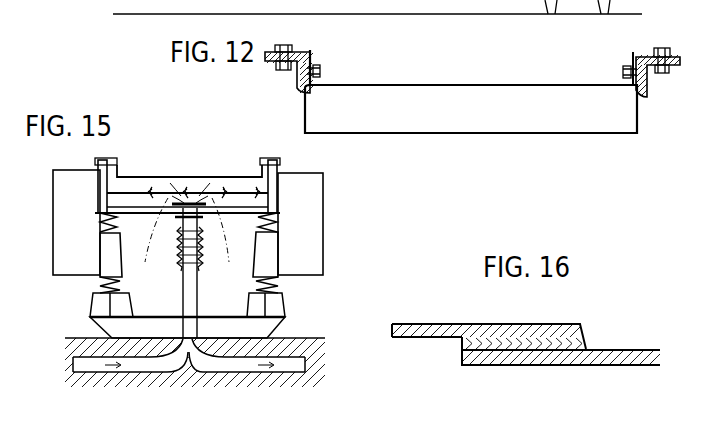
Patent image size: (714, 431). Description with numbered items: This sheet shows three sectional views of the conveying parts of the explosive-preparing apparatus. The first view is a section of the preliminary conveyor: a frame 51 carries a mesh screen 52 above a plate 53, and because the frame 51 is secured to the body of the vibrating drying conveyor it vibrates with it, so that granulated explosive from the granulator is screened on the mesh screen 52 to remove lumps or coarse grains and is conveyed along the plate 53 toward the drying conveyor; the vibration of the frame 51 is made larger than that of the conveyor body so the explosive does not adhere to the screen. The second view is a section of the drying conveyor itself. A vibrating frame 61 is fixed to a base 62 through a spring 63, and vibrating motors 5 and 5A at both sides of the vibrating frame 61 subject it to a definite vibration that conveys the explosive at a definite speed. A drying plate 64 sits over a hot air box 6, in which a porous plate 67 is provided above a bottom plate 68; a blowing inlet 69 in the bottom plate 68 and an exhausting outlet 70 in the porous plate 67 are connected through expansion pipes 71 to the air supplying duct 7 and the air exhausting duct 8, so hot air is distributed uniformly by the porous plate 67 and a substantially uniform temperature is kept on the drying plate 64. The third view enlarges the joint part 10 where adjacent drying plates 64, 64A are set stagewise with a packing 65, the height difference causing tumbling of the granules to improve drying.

In FIG. 12, the frame 51 is at (660, 75).
In FIG. 12, the mesh screen 52 is at (424, 87).
In FIG. 12, the plate 53 is at (489, 135).
In FIG. 15, the vibrating motor 5 is at (321, 210).
In FIG. 15, the vibrating motor 5A is at (68, 200).
In FIG. 15, the hot air box 6 is at (242, 190).
In FIG. 15, the air supplying duct 7 is at (130, 373).
In FIG. 15, the air exhausting duct 8 is at (283, 373).
In FIG. 16, the joint part 10 is at (586, 348).
In FIG. 15, the vibrating frame 61 is at (280, 167).
In FIG. 15, the base 62 is at (270, 321).
In FIG. 15, the spring 63 is at (268, 265).
In FIG. 15, the drying plate 64 is at (163, 177).
In FIG. 16, the drying plate 64 is at (452, 337).
In FIG. 16, the lower plate 64A is at (645, 362).
In FIG. 16, the packing 65 is at (498, 346).
In FIG. 15, the porous plate 67 is at (212, 193).
In FIG. 15, the bottom plate 68 is at (129, 245).
In FIG. 15, the blowing inlet 69 is at (180, 210).
In FIG. 15, the exhausting outlet 70 is at (249, 245).
In FIG. 15, the expansion pipe 71 is at (178, 257).